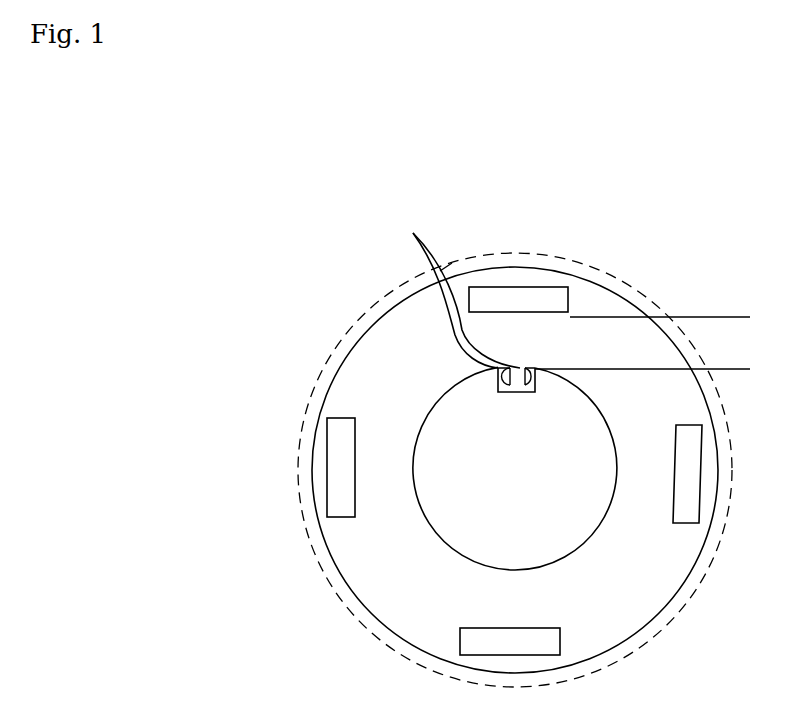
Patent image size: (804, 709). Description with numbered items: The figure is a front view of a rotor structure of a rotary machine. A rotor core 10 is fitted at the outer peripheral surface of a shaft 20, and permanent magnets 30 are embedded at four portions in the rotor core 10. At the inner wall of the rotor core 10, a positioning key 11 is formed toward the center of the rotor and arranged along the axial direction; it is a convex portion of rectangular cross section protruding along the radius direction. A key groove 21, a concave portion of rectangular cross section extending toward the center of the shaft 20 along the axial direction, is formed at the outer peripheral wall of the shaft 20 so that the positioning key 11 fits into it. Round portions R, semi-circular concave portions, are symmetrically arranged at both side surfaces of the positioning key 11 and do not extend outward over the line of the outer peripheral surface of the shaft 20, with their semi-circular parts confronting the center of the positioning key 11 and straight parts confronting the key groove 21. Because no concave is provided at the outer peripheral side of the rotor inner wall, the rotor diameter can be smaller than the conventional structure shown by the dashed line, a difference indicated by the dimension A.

The rotor core 10 is at (400, 343).
The shaft 20 is at (452, 422).
The permanent magnets 30 is at (550, 287).
The key groove 21 is at (505, 392).
The positioning key 11 is at (518, 392).
The Round portion R is at (466, 287).
The distance A is at (733, 324).